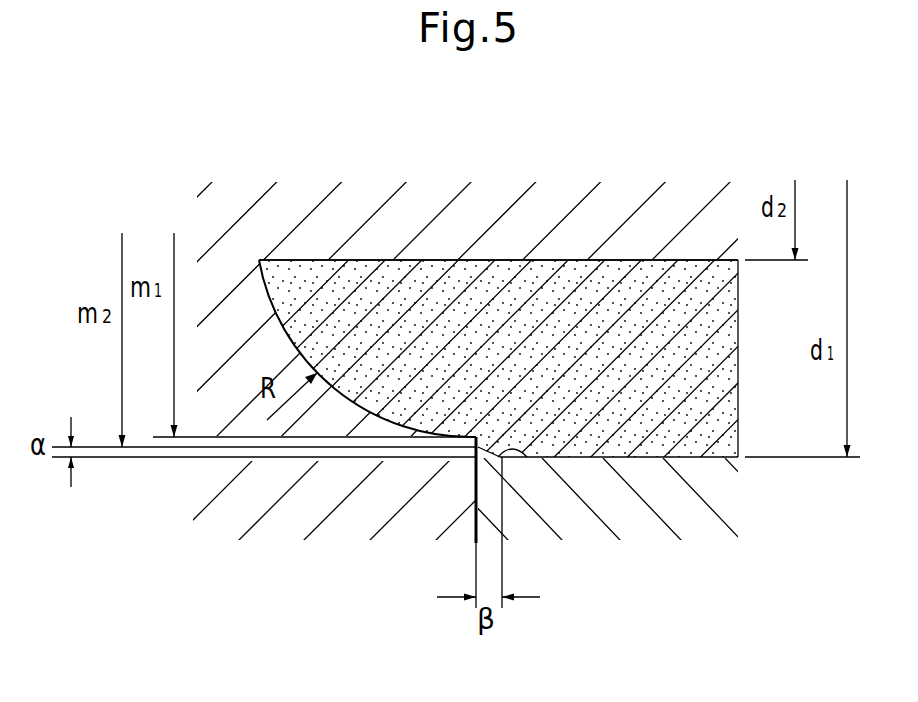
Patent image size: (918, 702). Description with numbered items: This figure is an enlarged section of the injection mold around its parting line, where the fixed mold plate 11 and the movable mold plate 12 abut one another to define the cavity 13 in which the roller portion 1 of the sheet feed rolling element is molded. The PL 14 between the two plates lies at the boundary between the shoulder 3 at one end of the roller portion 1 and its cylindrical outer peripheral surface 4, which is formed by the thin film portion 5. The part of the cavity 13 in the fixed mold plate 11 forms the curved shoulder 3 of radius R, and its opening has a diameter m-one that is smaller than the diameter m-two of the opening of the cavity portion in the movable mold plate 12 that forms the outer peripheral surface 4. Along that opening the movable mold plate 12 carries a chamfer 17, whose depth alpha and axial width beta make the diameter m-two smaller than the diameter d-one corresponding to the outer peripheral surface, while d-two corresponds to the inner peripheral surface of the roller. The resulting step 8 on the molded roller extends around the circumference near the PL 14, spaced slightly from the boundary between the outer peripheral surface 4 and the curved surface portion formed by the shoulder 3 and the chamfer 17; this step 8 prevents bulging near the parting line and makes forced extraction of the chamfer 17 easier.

The roller portion 1 is at (595, 293).
The shoulder 3 is at (353, 403).
The outer peripheral surface 4 is at (647, 458).
The thin film portion 5 is at (710, 393).
The step 8 is at (473, 458).
The fixed mold plate 11 is at (242, 505).
The movable mold plate 12 is at (702, 517).
The cavity 13 is at (504, 286).
The PL 14 is at (474, 520).
The chamfer 17 is at (530, 458).